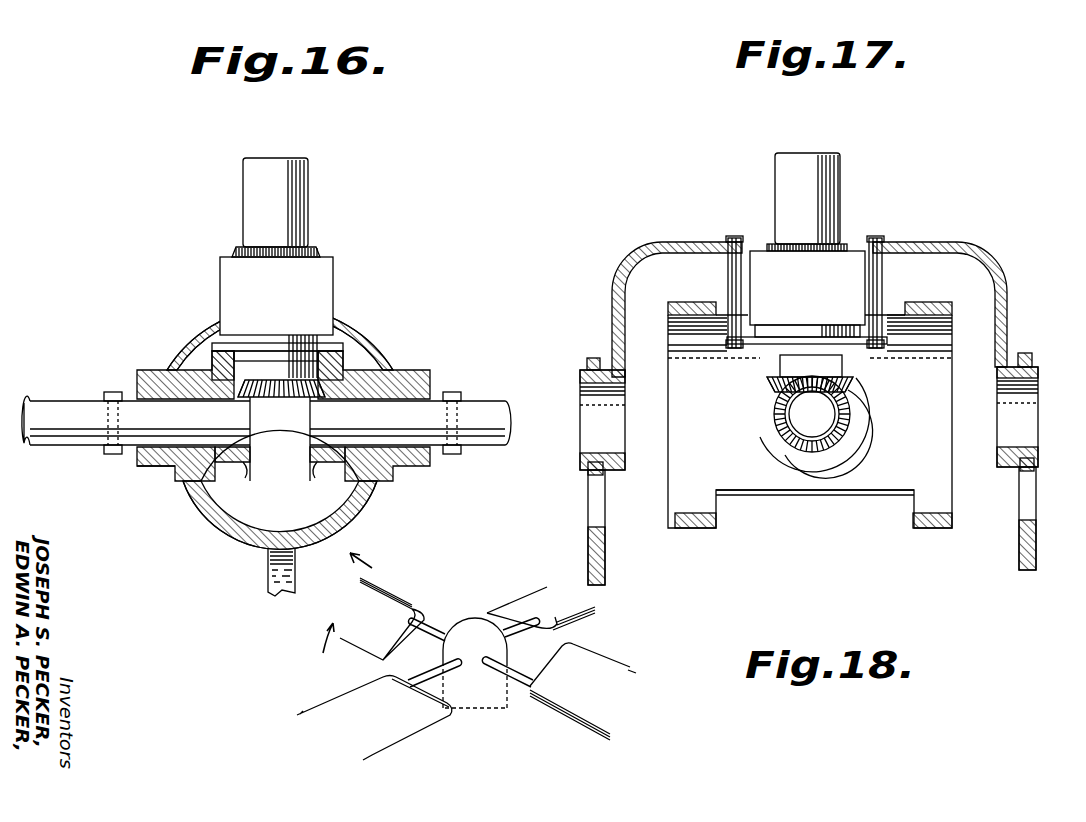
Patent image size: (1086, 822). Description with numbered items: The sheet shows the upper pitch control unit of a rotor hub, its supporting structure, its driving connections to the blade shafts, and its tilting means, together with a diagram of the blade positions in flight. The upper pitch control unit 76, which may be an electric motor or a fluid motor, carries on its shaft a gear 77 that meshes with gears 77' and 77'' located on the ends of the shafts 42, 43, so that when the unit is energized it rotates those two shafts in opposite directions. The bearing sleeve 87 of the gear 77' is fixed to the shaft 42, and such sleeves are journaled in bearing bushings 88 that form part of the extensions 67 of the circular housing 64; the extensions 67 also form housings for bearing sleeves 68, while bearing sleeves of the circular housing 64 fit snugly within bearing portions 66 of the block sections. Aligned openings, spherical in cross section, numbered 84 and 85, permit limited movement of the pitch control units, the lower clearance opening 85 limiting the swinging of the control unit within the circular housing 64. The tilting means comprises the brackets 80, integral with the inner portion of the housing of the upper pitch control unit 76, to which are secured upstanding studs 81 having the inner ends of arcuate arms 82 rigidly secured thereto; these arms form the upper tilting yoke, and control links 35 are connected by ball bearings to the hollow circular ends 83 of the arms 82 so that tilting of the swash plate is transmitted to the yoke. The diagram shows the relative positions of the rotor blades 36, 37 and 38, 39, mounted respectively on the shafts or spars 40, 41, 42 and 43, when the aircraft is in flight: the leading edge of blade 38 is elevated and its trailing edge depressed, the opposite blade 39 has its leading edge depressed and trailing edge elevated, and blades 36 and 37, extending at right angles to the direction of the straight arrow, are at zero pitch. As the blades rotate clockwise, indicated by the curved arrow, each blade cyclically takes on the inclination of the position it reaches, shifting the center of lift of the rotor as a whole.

In FIG. 17, the control links 35 is at (590, 540).
In FIG. 18, the rotor blade 36 is at (552, 583).
In FIG. 18, the rotor blade 37 is at (379, 709).
In FIG. 18, the rotor blade 38 is at (398, 604).
In FIG. 18, the rotor blade 39 is at (590, 715).
In FIG. 18, the shaft or spar 40 is at (540, 637).
In FIG. 18, the shaft or spar 41 is at (430, 679).
In FIG. 16, the shaft or spar 42 is at (54, 414).
In FIG. 17, the shaft or spar 42 is at (806, 418).
In FIG. 18, the shaft or spar 42 is at (433, 636).
In FIG. 16, the shaft or spar 43 is at (481, 410).
In FIG. 18, the shaft or spar 43 is at (517, 677).
In FIG. 17, the circular housing 64 is at (810, 415).
In FIG. 16, the bearing portions 66 is at (433, 392).
In FIG. 16, the extensions 67 is at (393, 474).
In FIG. 16, the bearing sleeves 68 is at (447, 452).
In FIG. 16, the upper pitch control unit 76 is at (291, 216).
In FIG. 17, the upper pitch control unit 76 is at (820, 198).
In FIG. 16, the gear 77 is at (281, 430).
In FIG. 17, the gear 77 is at (781, 391).
In FIG. 16, the gear 77' is at (250, 474).
In FIG. 16, the gear 77'' is at (321, 477).
In FIG. 17, the brackets 80 is at (752, 346).
In FIG. 17, the upstanding studs 81 is at (735, 280).
In FIG. 17, the arcuate arms 82 is at (661, 234).
In FIG. 17, the hollow circular ends 83 is at (585, 463).
In FIG. 17, the clearance opening 84 is at (893, 315).
In FIG. 16, the clearance opening 85 is at (231, 530).
In FIG. 17, the clearance opening 85 is at (893, 496).
In FIG. 16, the bearing sleeve 87 is at (128, 451).
In FIG. 16, the bearing bushings 88 is at (141, 466).